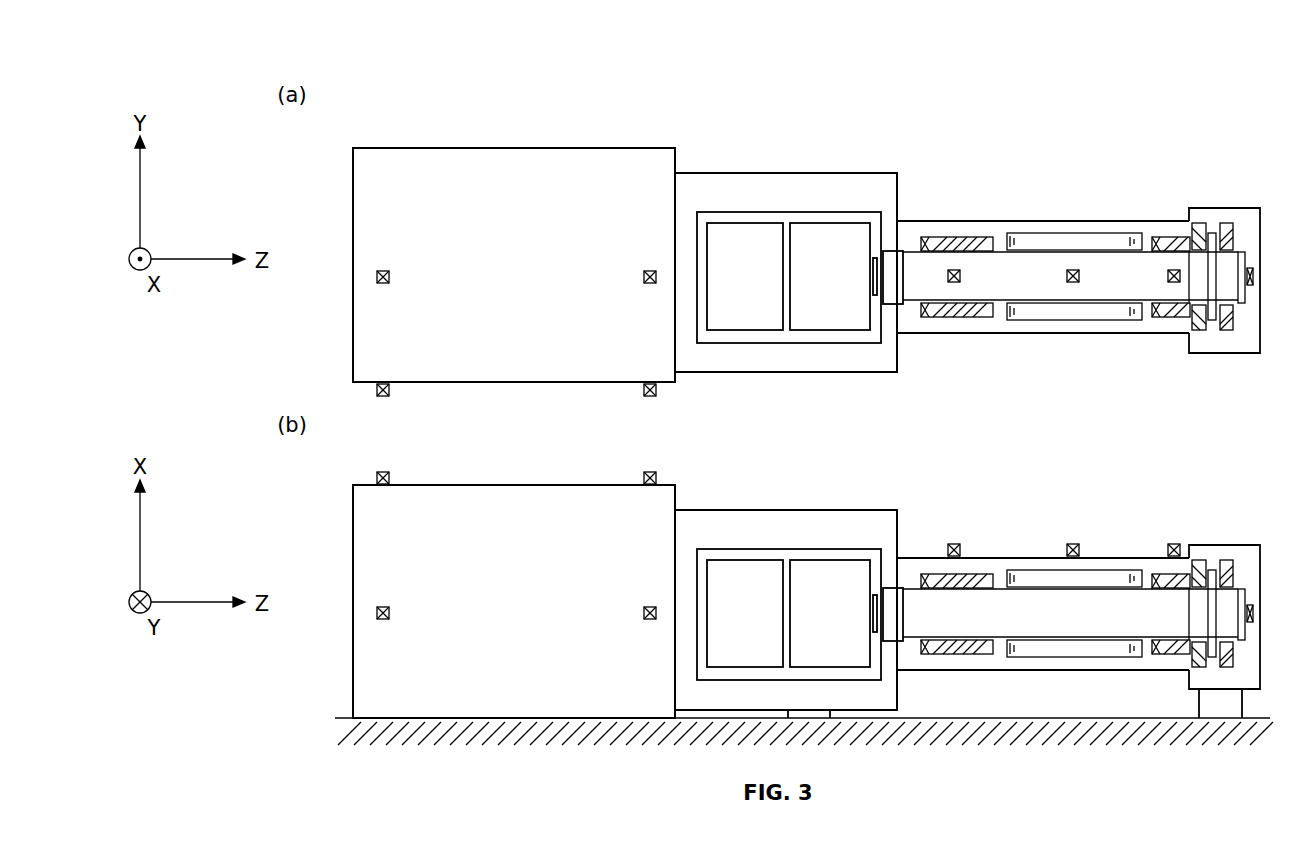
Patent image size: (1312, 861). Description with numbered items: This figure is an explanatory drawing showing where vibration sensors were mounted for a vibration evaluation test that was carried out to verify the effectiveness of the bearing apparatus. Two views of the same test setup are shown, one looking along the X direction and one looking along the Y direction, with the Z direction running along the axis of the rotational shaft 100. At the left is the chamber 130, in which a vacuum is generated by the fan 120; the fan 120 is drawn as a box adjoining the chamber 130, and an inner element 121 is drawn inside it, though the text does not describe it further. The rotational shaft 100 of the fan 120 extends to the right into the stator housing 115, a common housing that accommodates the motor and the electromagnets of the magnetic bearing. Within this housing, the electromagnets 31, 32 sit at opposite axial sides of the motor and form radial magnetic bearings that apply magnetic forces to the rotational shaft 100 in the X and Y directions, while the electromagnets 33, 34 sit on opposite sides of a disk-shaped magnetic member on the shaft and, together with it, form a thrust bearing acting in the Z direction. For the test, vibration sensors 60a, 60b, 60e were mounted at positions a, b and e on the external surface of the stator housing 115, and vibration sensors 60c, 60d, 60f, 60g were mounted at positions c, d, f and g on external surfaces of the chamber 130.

The chamber 130 is at (552, 103).
The fan 120 is at (849, 138).
The gear mechanism 121 is at (757, 173).
The rotational shaft 100 is at (1032, 285).
The stator housing 115 is at (1108, 232).
The electromagnet 31 is at (973, 237).
The electromagnet 32 is at (1198, 223).
The electromagnet 33 is at (1212, 233).
The electromagnet 34 is at (1228, 225).
The vibration sensor 60a is at (954, 269).
The vibration sensor 60b is at (1174, 269).
The vibration sensor 60c is at (389, 396).
The vibration sensor 60d is at (656, 396).
The vibration sensor 60e is at (1073, 269).
The vibration sensor 60f is at (383, 270).
The vibration sensor 60g is at (650, 270).